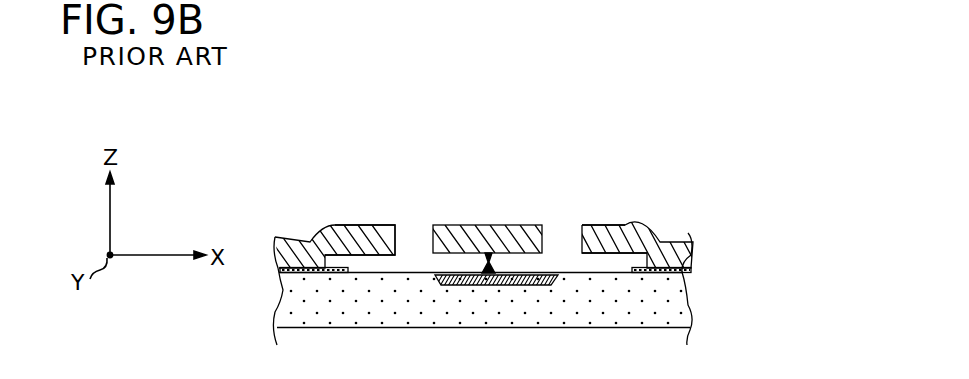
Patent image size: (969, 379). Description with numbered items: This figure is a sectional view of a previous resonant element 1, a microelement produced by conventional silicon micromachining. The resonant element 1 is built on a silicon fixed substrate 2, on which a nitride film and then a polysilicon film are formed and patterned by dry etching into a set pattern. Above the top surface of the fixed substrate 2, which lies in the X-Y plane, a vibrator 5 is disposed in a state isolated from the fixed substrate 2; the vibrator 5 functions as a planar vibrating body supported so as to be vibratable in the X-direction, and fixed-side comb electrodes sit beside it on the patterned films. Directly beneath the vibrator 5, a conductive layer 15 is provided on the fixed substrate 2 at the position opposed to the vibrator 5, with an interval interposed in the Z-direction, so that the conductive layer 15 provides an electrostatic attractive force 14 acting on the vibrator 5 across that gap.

The resonant element 1 is at (607, 136).
The fixed substrate 2 is at (576, 328).
The vibrator 5 is at (486, 226).
The electrostatic attractive force 14 is at (487, 264).
The conductive layer 15 is at (531, 286).